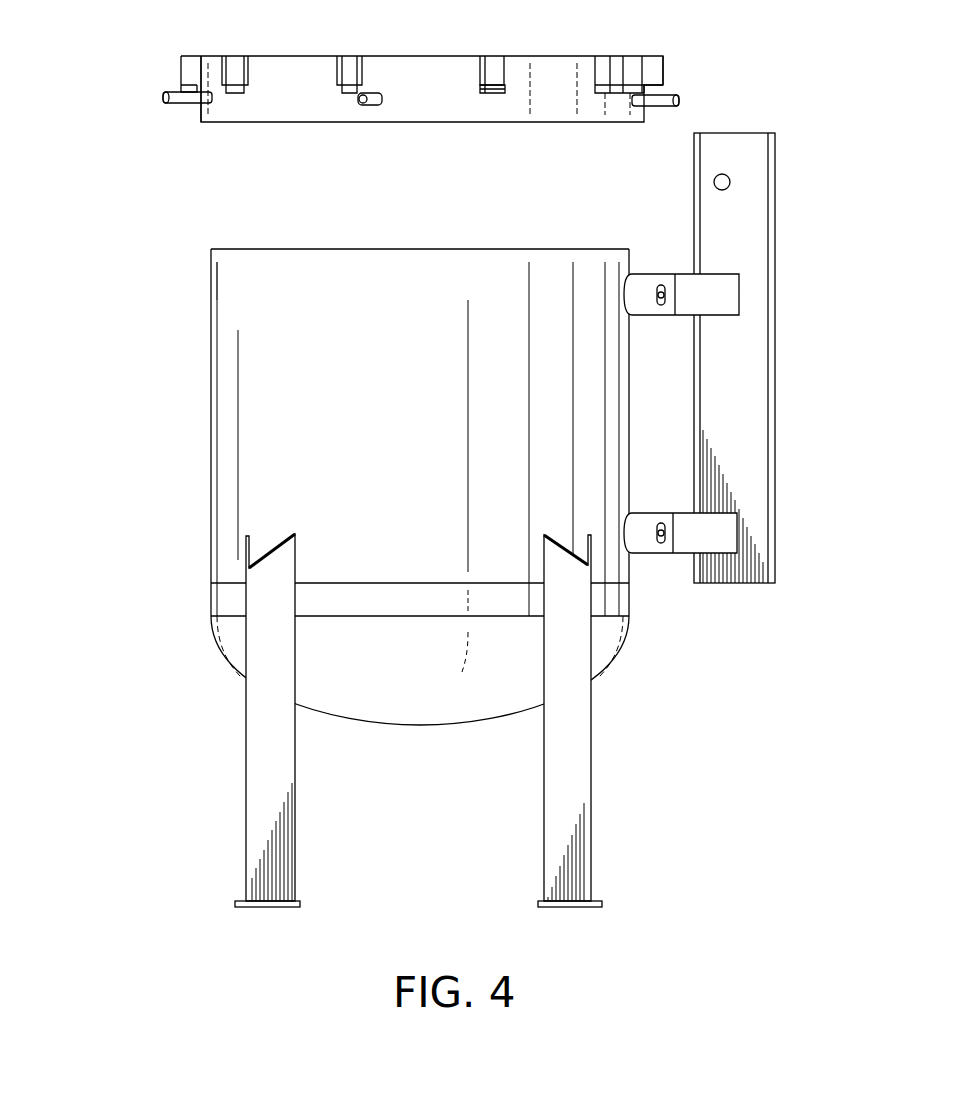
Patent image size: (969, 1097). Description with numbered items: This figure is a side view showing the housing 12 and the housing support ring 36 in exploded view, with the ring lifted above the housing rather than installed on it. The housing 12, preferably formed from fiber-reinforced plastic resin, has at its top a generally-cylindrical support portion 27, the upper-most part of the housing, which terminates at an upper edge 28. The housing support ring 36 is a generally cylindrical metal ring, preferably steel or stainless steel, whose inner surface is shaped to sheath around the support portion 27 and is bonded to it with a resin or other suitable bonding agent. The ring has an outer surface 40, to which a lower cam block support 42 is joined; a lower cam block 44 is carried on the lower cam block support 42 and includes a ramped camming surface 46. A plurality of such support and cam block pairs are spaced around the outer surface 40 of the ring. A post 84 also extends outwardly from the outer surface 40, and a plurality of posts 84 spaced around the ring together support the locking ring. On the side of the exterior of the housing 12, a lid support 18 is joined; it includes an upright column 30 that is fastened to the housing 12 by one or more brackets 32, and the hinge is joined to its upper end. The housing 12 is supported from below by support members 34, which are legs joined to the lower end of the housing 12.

The housing 12 is at (226, 446).
The lid support 18 is at (750, 616).
The support portion 27 is at (211, 272).
The upper edge 28 is at (522, 249).
The upright column 30 is at (760, 418).
The brackets 32 is at (688, 302).
The support members 34 is at (283, 772).
The housing support ring 36 is at (134, 74).
The outer surface 40 is at (295, 110).
The lower cam block support 42 is at (500, 69).
The lower cam block 44 is at (506, 90).
The ramped camming surface 46 is at (494, 95).
The post 84 is at (380, 100).